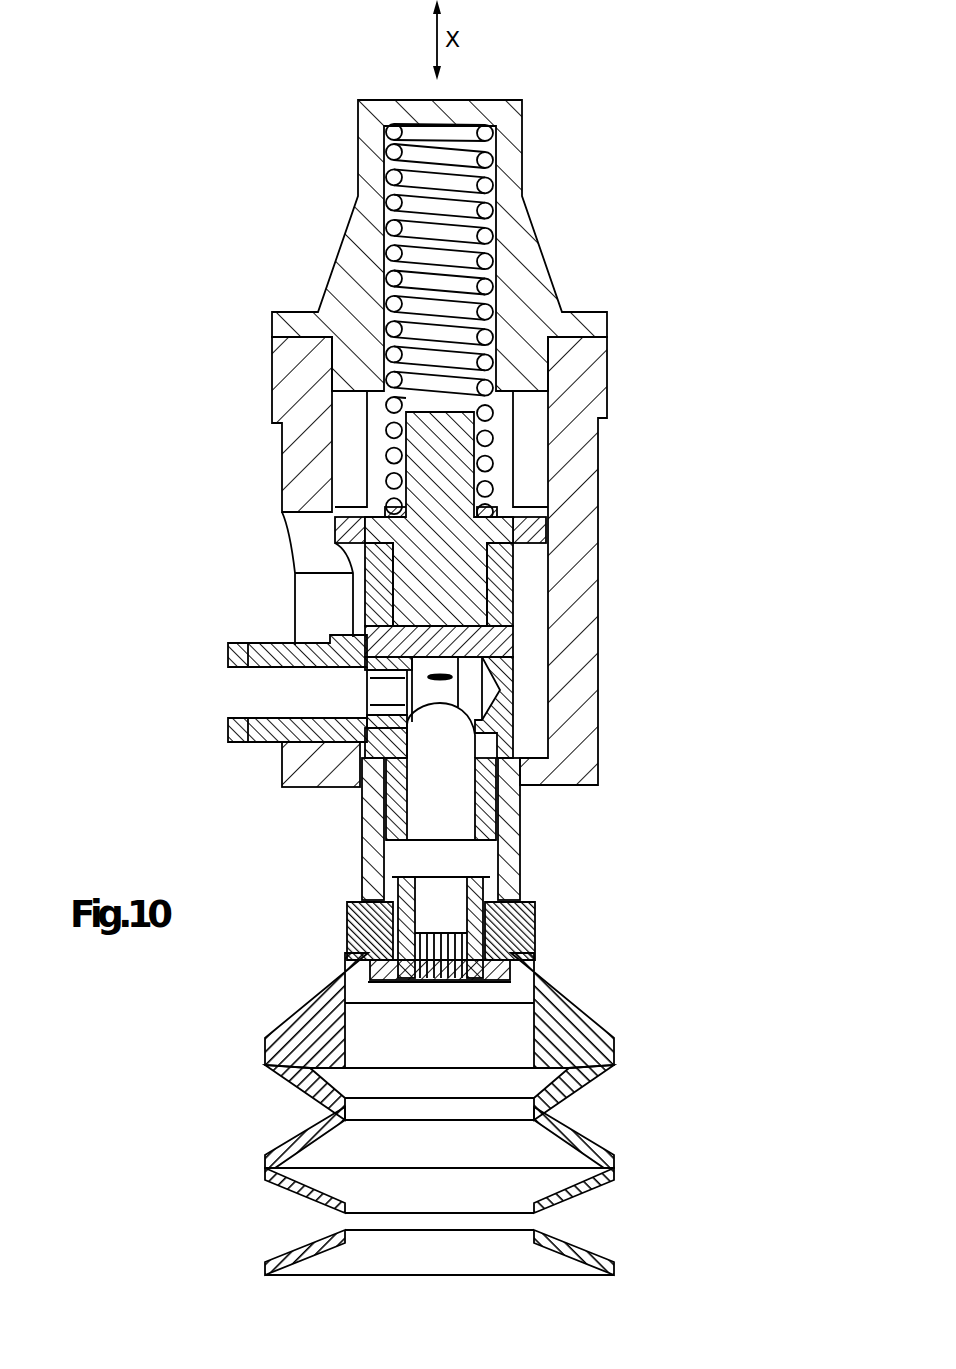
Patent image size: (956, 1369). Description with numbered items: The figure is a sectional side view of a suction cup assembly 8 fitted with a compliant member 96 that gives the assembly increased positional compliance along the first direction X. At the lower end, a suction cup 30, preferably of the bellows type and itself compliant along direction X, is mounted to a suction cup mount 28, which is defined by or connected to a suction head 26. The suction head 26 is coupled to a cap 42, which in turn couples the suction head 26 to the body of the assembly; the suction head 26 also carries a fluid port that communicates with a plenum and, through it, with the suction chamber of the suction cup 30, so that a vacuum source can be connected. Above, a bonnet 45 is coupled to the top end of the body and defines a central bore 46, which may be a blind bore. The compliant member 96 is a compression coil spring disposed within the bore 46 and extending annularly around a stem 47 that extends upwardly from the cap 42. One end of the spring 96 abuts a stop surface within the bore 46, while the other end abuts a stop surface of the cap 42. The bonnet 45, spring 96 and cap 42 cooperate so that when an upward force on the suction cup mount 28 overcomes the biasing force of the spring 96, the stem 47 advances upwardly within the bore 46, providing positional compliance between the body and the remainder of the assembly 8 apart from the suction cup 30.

The suction cup assembly 8 is at (738, 505).
The suction head 26 is at (508, 605).
The suction cup mount 28 is at (490, 924).
The suction cup 30 is at (588, 1247).
The cap 42 is at (437, 589).
The bonnet 45 is at (340, 300).
The central bore 46 is at (395, 134).
The stem 47 is at (440, 478).
The compliant member 96 is at (440, 256).